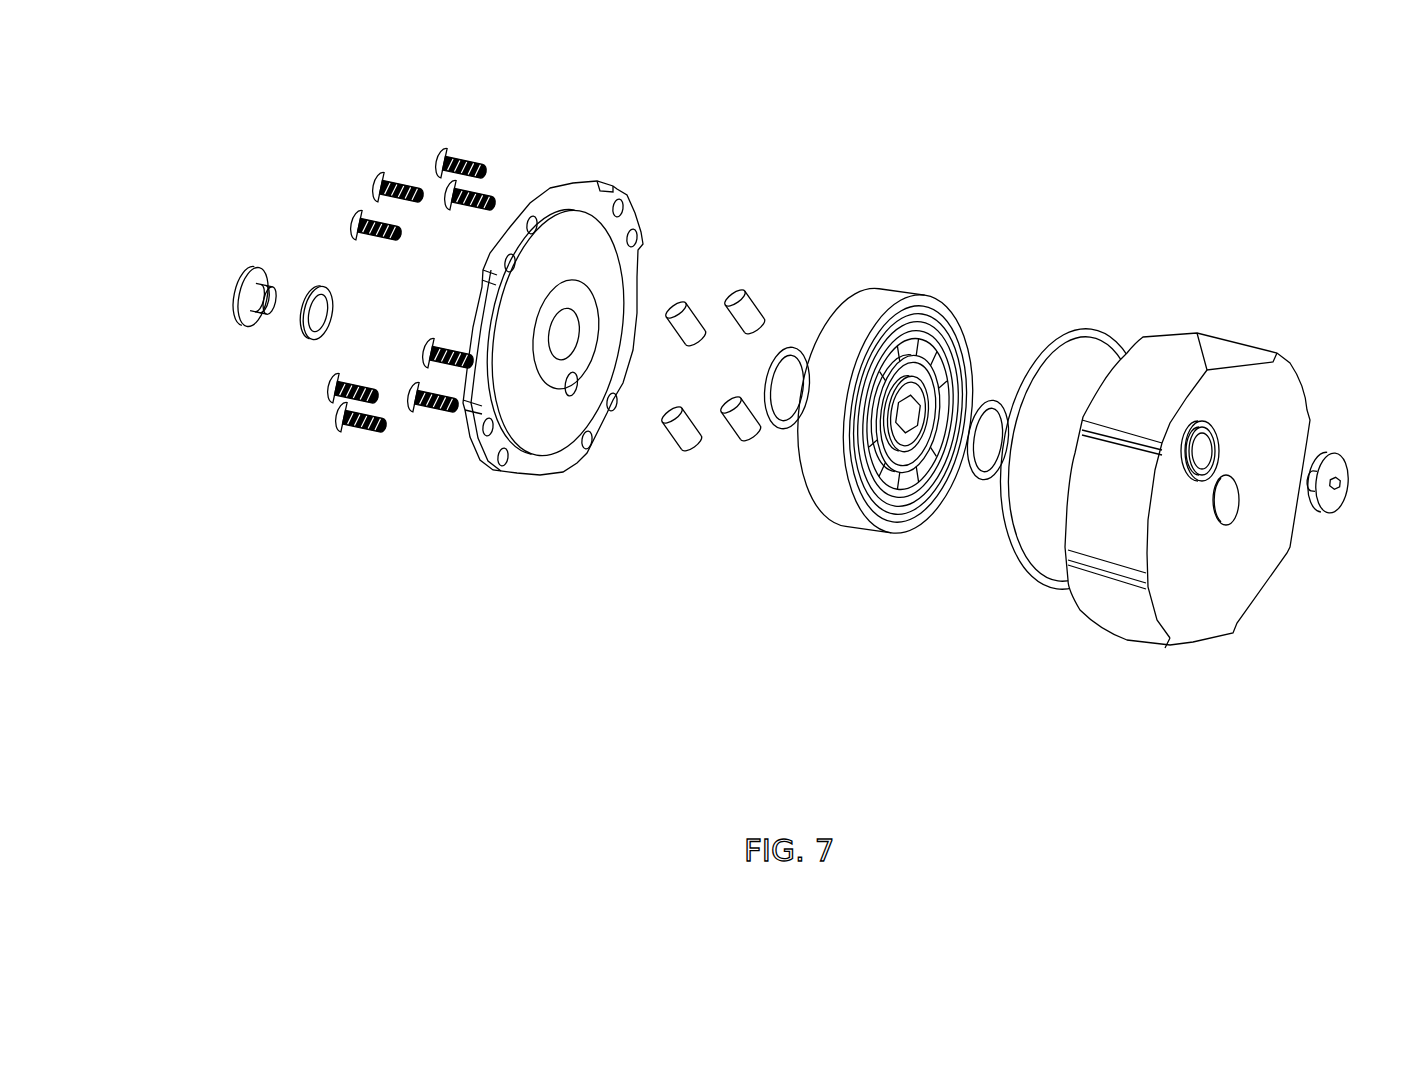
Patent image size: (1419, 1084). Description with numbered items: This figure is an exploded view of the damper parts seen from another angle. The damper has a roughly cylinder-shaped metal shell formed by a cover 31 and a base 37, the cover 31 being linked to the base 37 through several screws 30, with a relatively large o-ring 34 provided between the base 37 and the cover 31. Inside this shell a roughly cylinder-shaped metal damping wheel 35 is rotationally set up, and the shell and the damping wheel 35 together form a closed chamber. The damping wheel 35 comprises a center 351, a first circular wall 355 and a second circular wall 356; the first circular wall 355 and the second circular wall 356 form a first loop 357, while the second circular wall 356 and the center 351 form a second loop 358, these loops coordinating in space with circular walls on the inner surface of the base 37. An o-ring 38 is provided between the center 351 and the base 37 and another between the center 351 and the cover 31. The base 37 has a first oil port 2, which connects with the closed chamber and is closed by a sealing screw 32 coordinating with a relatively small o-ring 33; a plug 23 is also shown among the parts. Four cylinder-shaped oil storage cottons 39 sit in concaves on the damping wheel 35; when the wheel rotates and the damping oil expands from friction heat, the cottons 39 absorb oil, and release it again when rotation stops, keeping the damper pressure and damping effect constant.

The first oil port 2 is at (1278, 412).
The plug 23 is at (213, 346).
The screws 30 is at (399, 357).
The cover 31 is at (513, 390).
The sealing screw 32 is at (1281, 605).
The o-ring 33 is at (759, 518).
The o-ring 34 is at (1028, 508).
The damping wheel 35 is at (867, 444).
The base 37 is at (1188, 532).
The o-ring 38 is at (872, 443).
The oil storage cotton 39 is at (637, 452).
The center 351 is at (966, 378).
The first circular wall 355 is at (852, 373).
The second circular wall 356 is at (958, 356).
The first loop 357 is at (936, 457).
The second loop 358 is at (880, 483).